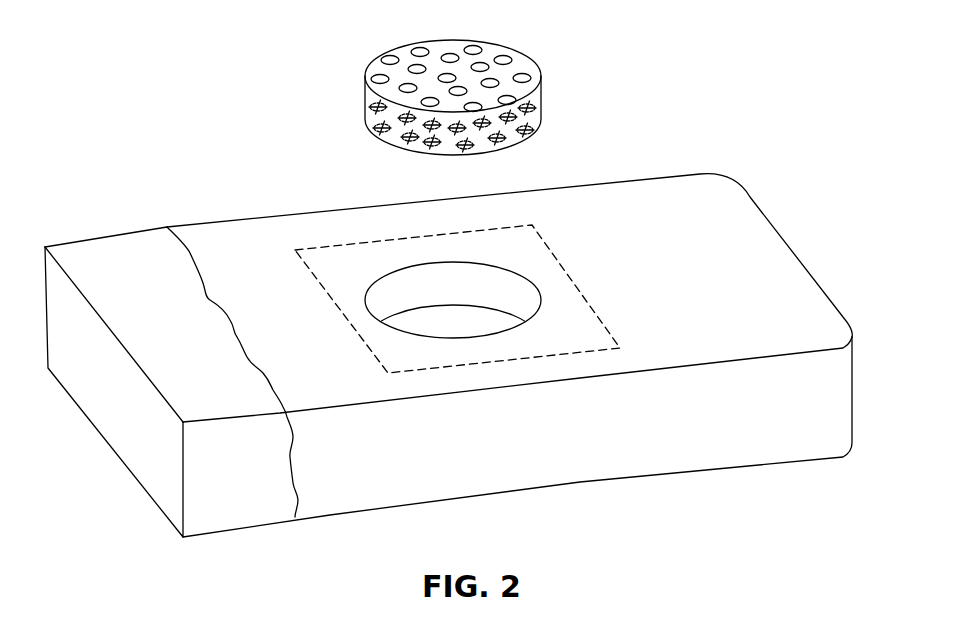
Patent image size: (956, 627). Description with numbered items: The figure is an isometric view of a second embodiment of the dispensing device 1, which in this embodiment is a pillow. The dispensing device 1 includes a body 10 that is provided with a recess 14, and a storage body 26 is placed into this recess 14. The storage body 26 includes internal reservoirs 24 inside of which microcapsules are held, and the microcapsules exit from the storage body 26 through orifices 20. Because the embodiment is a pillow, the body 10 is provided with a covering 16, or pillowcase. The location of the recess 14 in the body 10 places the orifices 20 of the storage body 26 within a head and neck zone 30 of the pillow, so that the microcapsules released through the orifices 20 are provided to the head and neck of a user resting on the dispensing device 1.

The dispensing device 1 is at (135, 83).
The body 10 is at (548, 454).
The recess 14 is at (530, 300).
The covering 16 is at (72, 252).
The orifices 20 is at (380, 79).
The internal reservoirs 24 is at (375, 128).
The storage body 26 is at (488, 62).
The head and neck zone 30 is at (533, 233).